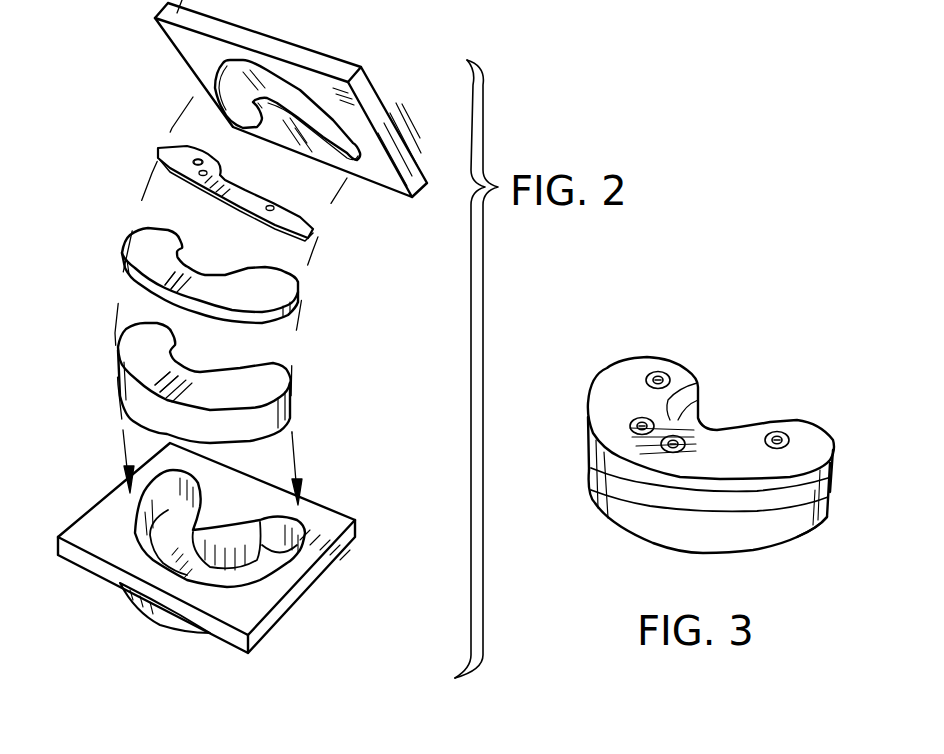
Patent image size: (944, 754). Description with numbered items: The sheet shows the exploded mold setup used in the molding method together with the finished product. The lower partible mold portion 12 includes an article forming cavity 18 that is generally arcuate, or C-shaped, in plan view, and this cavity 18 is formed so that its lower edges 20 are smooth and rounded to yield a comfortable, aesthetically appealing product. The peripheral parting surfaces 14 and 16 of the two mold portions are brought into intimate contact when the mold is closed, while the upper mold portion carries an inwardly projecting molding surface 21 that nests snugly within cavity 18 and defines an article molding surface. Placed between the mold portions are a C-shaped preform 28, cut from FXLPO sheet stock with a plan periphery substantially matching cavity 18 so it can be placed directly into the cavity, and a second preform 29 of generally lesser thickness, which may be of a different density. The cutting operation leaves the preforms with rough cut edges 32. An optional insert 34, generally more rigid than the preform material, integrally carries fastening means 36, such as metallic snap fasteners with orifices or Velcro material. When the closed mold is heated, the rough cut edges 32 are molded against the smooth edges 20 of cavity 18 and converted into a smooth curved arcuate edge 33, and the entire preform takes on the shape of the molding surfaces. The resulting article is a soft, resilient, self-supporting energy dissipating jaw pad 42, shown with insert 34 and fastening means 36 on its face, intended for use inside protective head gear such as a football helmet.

In FIG. 2, the partible mold portion 12 is at (273, 622).
In FIG. 2, the peripheral parting surface 14 is at (178, 43).
In FIG. 2, the peripheral parting surface 16 is at (102, 530).
In FIG. 2, the article forming cavity 18 is at (283, 560).
In FIG. 2, the lower edges 20 is at (167, 510).
In FIG. 2, the molding surface 21 is at (303, 98).
In FIG. 2, the preform 28 is at (133, 362).
In FIG. 3, the preform 28 is at (642, 517).
In FIG. 2, the preform 29 is at (137, 247).
In FIG. 3, the preform 29 is at (772, 498).
In FIG. 2, the rough cut edges 32 is at (221, 272).
In FIG. 3, the smooth curved arcuate edge 33 is at (827, 520).
In FIG. 2, the insert 34 is at (300, 220).
In FIG. 3, the insert 34 is at (817, 430).
In FIG. 2, the fastening means 36 is at (157, 150).
In FIG. 3, the fastening means 36 is at (658, 372).
In FIG. 3, the jaw pad 42 is at (735, 405).